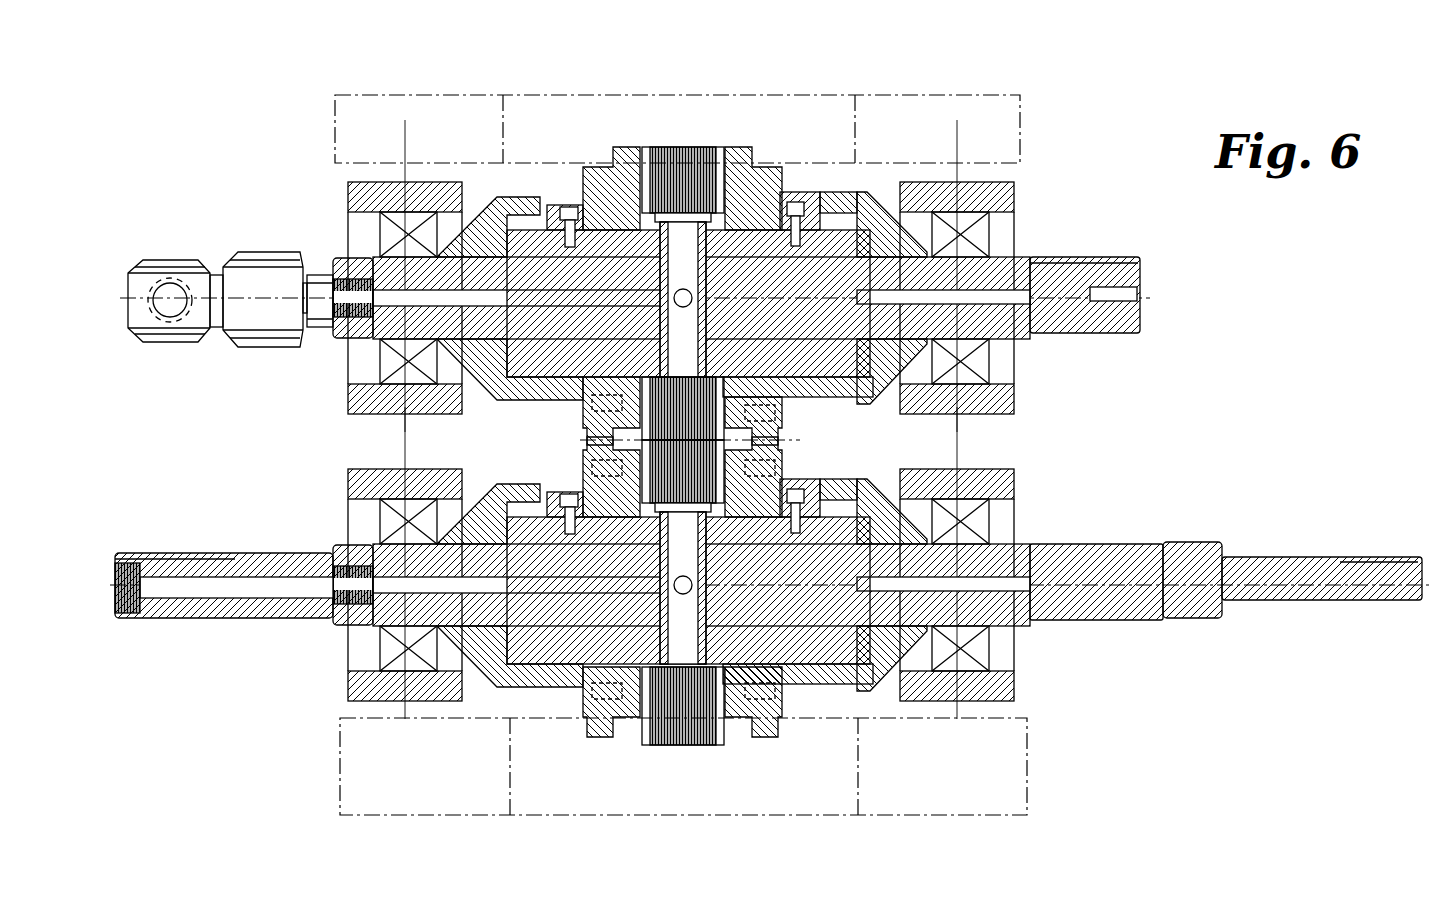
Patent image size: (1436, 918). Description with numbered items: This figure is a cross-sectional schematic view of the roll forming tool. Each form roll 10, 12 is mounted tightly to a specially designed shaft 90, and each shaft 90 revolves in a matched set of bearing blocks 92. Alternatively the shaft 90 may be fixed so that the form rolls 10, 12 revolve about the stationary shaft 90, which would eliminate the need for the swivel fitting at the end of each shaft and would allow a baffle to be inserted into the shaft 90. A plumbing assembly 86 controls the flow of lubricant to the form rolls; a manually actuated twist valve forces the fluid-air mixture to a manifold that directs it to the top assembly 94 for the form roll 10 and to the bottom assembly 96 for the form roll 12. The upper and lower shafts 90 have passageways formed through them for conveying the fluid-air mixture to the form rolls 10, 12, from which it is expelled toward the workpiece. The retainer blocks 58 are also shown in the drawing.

The plumbing assembly 86 is at (258, 188).
The top assembly 94 is at (490, 185).
The bottom assembly 96 is at (495, 705).
The retainer blocks 58 is at (577, 177).
The form roll 10 is at (698, 140).
The form roll 12 is at (685, 752).
The shaft 90 is at (1065, 257).
The bearing blocks 92 is at (352, 390).